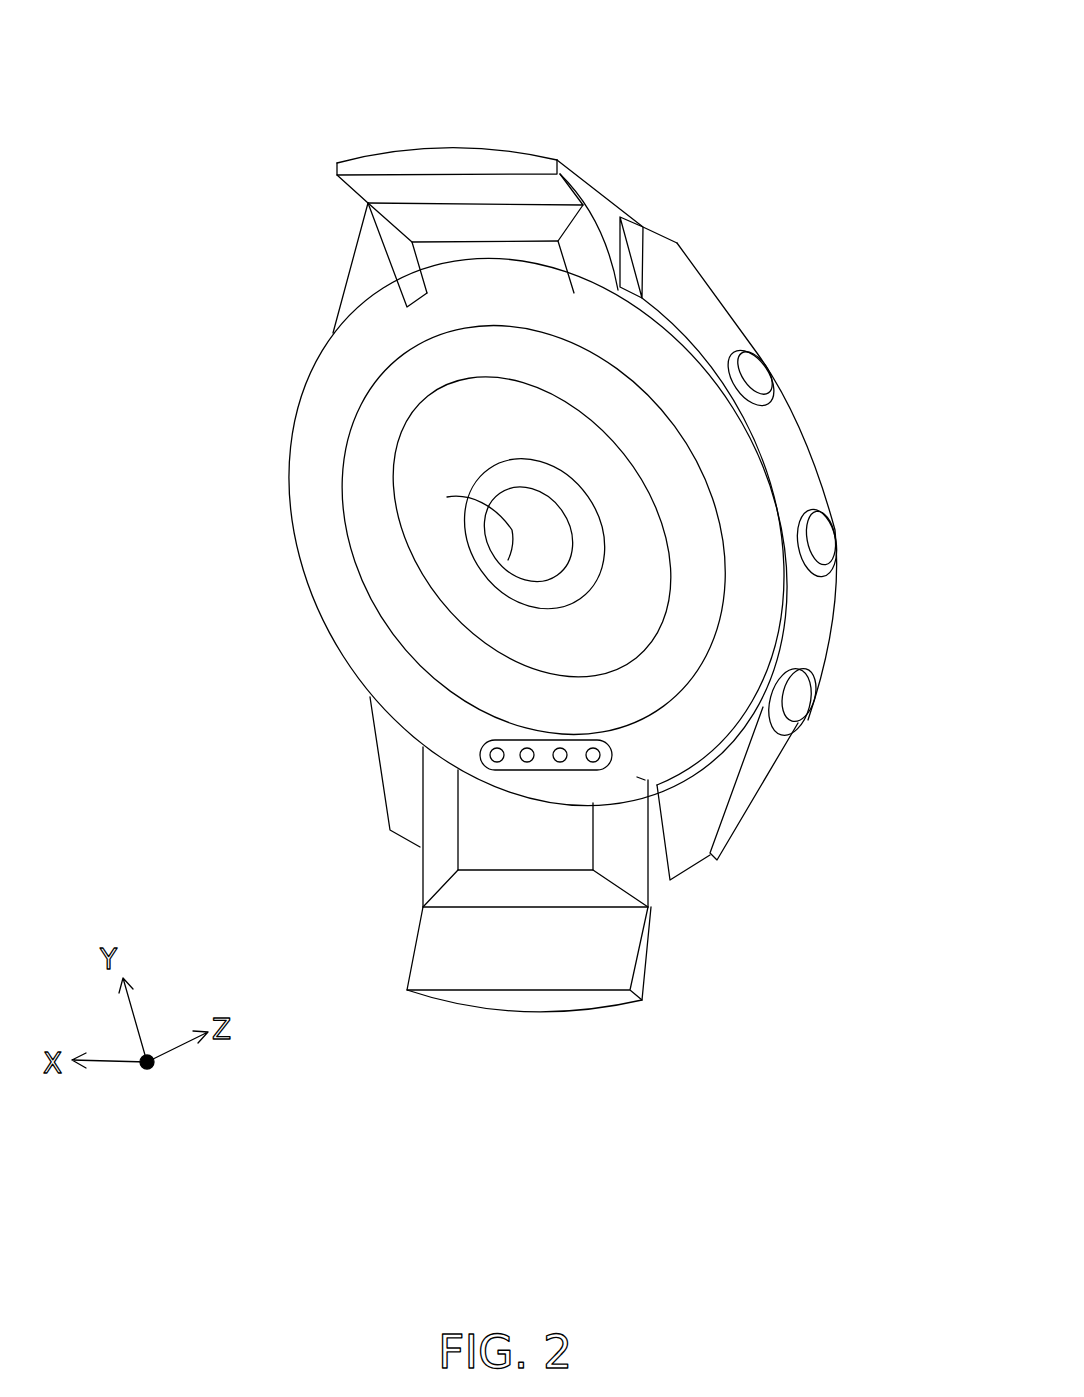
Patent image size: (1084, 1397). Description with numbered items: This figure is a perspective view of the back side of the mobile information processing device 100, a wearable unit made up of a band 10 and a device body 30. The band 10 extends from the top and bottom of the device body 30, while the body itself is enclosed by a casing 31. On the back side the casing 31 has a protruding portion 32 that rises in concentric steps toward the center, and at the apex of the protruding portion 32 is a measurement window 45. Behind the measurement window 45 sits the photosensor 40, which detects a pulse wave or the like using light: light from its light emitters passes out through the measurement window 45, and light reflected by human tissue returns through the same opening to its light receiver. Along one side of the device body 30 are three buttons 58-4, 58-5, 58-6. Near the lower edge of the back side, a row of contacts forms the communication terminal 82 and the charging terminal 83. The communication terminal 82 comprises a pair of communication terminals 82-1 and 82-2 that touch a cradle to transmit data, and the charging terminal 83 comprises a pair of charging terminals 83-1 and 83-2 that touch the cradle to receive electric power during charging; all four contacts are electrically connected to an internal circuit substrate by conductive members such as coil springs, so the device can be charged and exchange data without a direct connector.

The mobile information processing device 100 is at (900, 72).
The band 10 is at (365, 170).
The device body 30 is at (283, 395).
The casing 31 is at (352, 646).
The protruding portion 32 is at (403, 466).
The photosensor 40 is at (550, 527).
The measurement window 45 is at (447, 497).
The button 58-4 is at (760, 370).
The button 58-5 is at (827, 550).
The button 58-6 is at (799, 700).
The communication terminal 82 is at (262, 857).
The communication terminal 82-1 is at (588, 759).
The communication terminal 82-2 is at (554, 759).
The charging terminal 83 is at (262, 798).
The charging terminal 83-1 is at (520, 758).
The charging terminal 83-2 is at (490, 758).